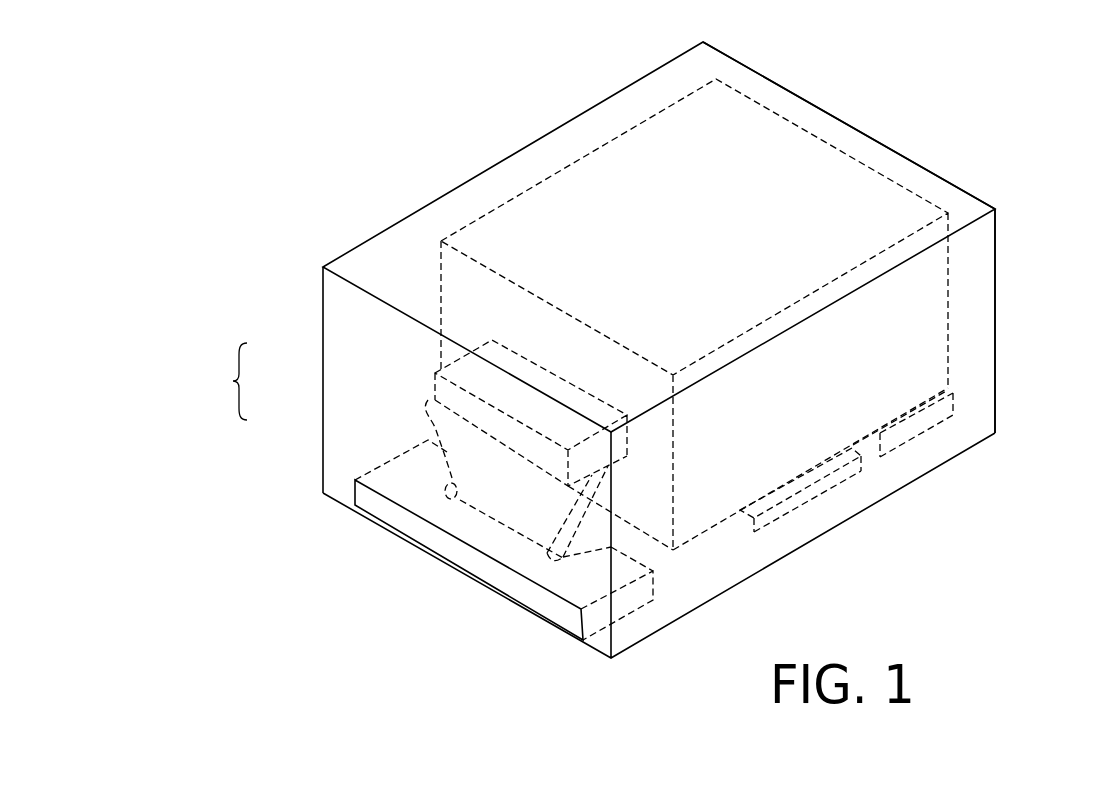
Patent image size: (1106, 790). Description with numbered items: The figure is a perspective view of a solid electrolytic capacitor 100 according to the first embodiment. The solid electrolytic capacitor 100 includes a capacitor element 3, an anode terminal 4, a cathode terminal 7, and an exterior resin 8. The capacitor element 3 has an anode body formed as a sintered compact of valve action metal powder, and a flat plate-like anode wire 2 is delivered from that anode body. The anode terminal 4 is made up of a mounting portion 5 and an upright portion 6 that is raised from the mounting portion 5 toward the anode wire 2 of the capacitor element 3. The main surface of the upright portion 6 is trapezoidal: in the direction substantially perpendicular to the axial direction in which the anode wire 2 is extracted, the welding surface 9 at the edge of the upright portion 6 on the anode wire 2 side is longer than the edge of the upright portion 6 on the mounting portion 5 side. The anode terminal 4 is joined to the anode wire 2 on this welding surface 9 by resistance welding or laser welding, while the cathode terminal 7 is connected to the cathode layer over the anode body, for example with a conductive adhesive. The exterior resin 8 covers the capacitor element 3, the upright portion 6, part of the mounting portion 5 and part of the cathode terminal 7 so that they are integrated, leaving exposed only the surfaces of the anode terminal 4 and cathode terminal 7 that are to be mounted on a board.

The solid electrolytic capacitor 100 is at (917, 128).
The anode wire 2 is at (527, 443).
The capacitor element 3 is at (738, 157).
The anode terminal 4 is at (227, 381).
The mounting portion 5 is at (382, 480).
The upright portion 6 is at (448, 437).
The cathode terminal 7 is at (921, 420).
The exterior resin 8 is at (502, 185).
The welding surface 9 is at (608, 465).